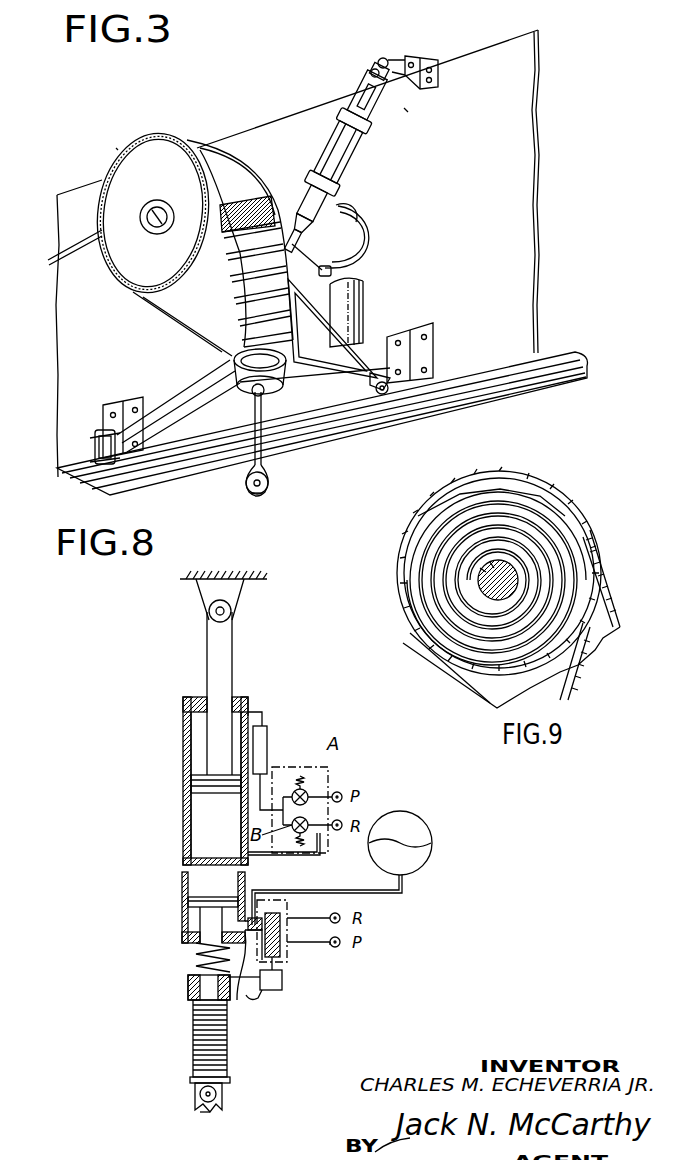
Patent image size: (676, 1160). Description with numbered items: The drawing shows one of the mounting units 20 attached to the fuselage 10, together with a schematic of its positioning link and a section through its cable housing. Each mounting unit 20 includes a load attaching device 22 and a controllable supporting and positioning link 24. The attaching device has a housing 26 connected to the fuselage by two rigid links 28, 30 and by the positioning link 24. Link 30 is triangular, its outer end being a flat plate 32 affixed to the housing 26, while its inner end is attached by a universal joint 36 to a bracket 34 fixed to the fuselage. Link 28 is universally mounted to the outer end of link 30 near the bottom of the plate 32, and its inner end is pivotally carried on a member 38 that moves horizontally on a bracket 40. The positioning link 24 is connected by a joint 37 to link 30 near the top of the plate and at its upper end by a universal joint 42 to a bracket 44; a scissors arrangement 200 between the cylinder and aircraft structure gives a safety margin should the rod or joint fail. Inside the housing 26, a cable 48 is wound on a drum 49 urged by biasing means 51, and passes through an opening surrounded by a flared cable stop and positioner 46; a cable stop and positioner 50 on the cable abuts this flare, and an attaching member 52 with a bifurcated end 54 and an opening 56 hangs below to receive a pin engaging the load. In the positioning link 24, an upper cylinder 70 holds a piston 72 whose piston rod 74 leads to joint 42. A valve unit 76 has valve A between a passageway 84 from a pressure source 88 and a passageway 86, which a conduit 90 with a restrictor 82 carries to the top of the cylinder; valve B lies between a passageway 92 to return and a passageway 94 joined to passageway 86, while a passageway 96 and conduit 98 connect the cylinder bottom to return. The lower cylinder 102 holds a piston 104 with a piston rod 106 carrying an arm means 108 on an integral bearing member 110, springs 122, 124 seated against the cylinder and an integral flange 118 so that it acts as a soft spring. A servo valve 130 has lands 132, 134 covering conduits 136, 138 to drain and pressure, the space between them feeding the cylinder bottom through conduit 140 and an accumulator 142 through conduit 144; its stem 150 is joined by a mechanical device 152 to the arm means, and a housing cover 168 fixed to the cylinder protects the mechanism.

In FIG. 3, the fuselage 10 is at (548, 192).
In FIG. 8, the fuselage 10 is at (236, 572).
In FIG. 3, the mounting unit 20 is at (110, 138).
In FIG. 3, the load attaching device 22 is at (135, 294).
In FIG. 3, the controllable supporting and positioning link 24 is at (316, 147).
In FIG. 8, the controllable supporting and positioning link 24 is at (132, 822).
In FIG. 3, the housing 26 is at (162, 135).
In FIG. 9, the housing 26 is at (537, 493).
In FIG. 3, the rigid link 28 is at (175, 405).
In FIG. 3, the rigid link 30 is at (310, 368).
In FIG. 8, the rigid link 30 is at (210, 1114).
In FIG. 3, the flat plate 32 is at (298, 330).
In FIG. 3, the bracket 34 is at (442, 335).
In FIG. 3, the universal joint 36 is at (385, 395).
In FIG. 3, the joint 37 is at (333, 270).
In FIG. 8, the joint 37 is at (194, 1102).
In FIG. 3, the member 38 is at (118, 458).
In FIG. 3, the bracket 40 is at (112, 405).
In FIG. 3, the universal joint 42 is at (384, 58).
In FIG. 8, the universal joint 42 is at (232, 618).
In FIG. 3, the bracket 44 is at (416, 58).
In FIG. 8, the bracket 44 is at (236, 590).
In FIG. 3, the flared cable stop and positioner 46 is at (234, 362).
In FIG. 9, the cable 48 is at (585, 652).
In FIG. 9, the drum 49 is at (398, 578).
In FIG. 3, the cable stop and positioner 50 is at (248, 392).
In FIG. 9, the biasing means 51 is at (570, 550).
In FIG. 3, the attaching member 52 is at (263, 425).
In FIG. 3, the bifurcated end 54 is at (249, 492).
In FIG. 3, the opening 56 is at (271, 486).
In FIG. 8, the cylinder 70 is at (172, 863).
In FIG. 8, the piston 72 is at (195, 792).
In FIG. 8, the piston rod 74 is at (207, 650).
In FIG. 8, the valve unit 76 is at (279, 755).
In FIG. 8, the restrictor 82 is at (268, 736).
In FIG. 8, the passageway 84 is at (330, 785).
In FIG. 8, the passageway 86 is at (283, 797).
In FIG. 8, the pressure source 88 is at (345, 795).
In FIG. 8, the conduit 90 is at (260, 802).
In FIG. 8, the passageway 92 is at (335, 821).
In FIG. 8, the passageway 94 is at (325, 811).
In FIG. 8, the passageway 96 is at (327, 846).
In FIG. 8, the conduit 98 is at (290, 870).
In FIG. 8, the cylinder 102 is at (170, 943).
In FIG. 8, the piston 104 is at (195, 905).
In FIG. 8, the piston rod 106 is at (208, 920).
In FIG. 8, the arm means 108 is at (284, 1002).
In FIG. 8, the integral bearing member 110 is at (190, 985).
In FIG. 8, the integral flange 118 is at (190, 1080).
In FIG. 8, the spring 122 is at (198, 963).
In FIG. 8, the spring 124 is at (195, 1034).
In FIG. 3, the servo valve 130 is at (352, 208).
In FIG. 8, the servo valve 130 is at (286, 915).
In FIG. 8, the land 132 is at (313, 932).
In FIG. 8, the land 134 is at (284, 948).
In FIG. 8, the conduit 136 is at (328, 908).
In FIG. 8, the conduit 138 is at (334, 948).
In FIG. 8, the conduit 140 is at (238, 990).
In FIG. 3, the accumulator 142 is at (358, 290).
In FIG. 8, the accumulator 142 is at (426, 838).
In FIG. 3, the conduit 144 is at (365, 240).
In FIG. 8, the conduit 144 is at (330, 887).
In FIG. 8, the stem 150 is at (275, 966).
In FIG. 8, the mechanical device 152 is at (283, 980).
In FIG. 3, the housing cover 168 is at (350, 226).
In FIG. 3, the scissors arrangement 200 is at (418, 114).